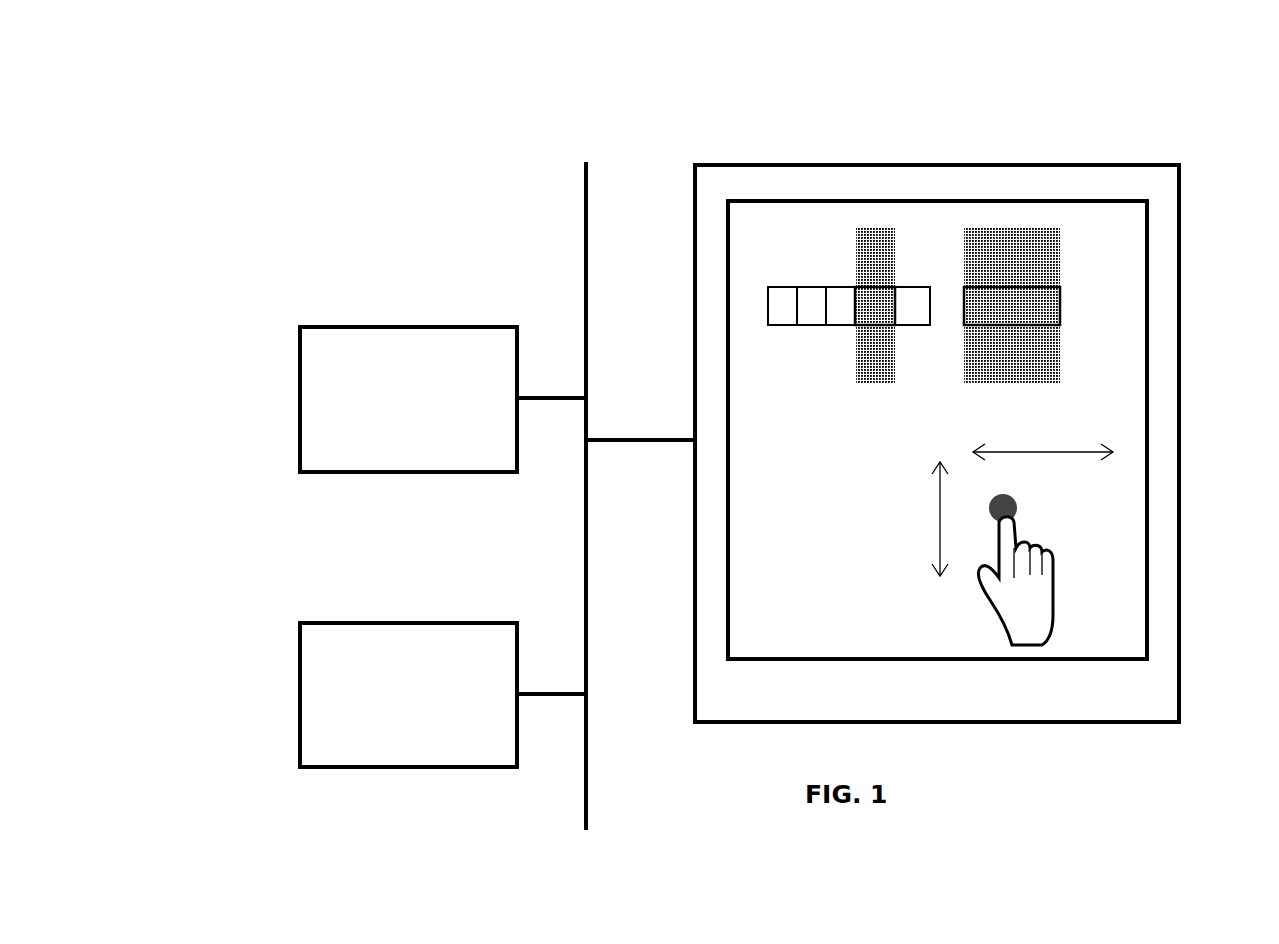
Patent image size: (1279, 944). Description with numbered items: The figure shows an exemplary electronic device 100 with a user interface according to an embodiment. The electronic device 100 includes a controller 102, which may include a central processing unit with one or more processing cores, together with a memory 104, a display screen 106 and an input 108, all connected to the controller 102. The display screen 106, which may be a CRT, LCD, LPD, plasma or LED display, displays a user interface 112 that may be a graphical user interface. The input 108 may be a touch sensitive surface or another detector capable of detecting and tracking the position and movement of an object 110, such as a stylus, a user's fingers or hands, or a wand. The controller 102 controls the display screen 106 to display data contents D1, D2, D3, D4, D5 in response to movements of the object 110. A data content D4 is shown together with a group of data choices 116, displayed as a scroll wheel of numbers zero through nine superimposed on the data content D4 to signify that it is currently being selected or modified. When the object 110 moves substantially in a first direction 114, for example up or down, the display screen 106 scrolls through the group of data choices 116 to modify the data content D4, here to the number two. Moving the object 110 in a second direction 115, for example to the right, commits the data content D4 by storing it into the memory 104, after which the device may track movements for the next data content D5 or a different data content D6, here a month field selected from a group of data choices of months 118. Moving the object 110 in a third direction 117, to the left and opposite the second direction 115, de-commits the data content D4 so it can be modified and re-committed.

The electronic device 100 is at (694, 502).
The controller 102 is at (353, 386).
The memory 104 is at (353, 672).
The display screen 106 is at (979, 430).
The input 108 is at (996, 364).
The object 110 is at (1114, 516).
The user interface 112 is at (1000, 349).
The first direction 114 is at (1099, 595).
The second direction 115 is at (1118, 422).
The group of data choices 116 is at (866, 204).
The third direction 117 is at (1089, 450).
The group of data choices of months 118 is at (1105, 284).
The data content D1 is at (767, 224).
The data content D2 is at (799, 198).
The data content D3 is at (831, 220).
The data content D4 is at (839, 381).
The data content D5 is at (917, 224).
The data content D6 is at (992, 211).